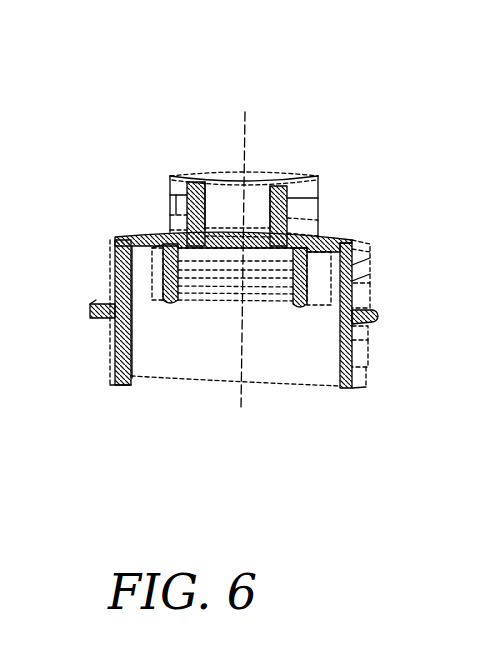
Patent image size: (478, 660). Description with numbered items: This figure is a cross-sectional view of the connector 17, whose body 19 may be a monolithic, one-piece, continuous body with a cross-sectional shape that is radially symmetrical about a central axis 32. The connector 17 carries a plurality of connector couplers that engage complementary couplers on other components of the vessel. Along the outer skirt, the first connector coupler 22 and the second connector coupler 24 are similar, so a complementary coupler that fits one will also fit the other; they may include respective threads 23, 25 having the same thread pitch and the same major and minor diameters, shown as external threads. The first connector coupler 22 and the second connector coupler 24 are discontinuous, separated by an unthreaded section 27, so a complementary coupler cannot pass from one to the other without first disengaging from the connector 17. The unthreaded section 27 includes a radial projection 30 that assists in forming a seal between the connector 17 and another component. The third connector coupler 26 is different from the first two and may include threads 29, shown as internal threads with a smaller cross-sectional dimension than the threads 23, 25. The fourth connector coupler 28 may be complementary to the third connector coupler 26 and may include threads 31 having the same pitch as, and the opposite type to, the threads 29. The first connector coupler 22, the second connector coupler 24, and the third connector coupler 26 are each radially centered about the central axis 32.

The connector 17 is at (237, 228).
The body 19 is at (229, 318).
The first connector coupler 22 is at (372, 365).
The threads 23 is at (113, 364).
The second connector coupler 24 is at (372, 276).
The threads 25 is at (113, 277).
The third connector coupler 26 is at (265, 291).
The unthreaded section 27 is at (112, 299).
The fourth connector coupler 28 is at (181, 196).
The threads 29 is at (200, 286).
The radial projection 30 is at (376, 320).
The threads 31 is at (237, 188).
The central axis 32 is at (247, 135).